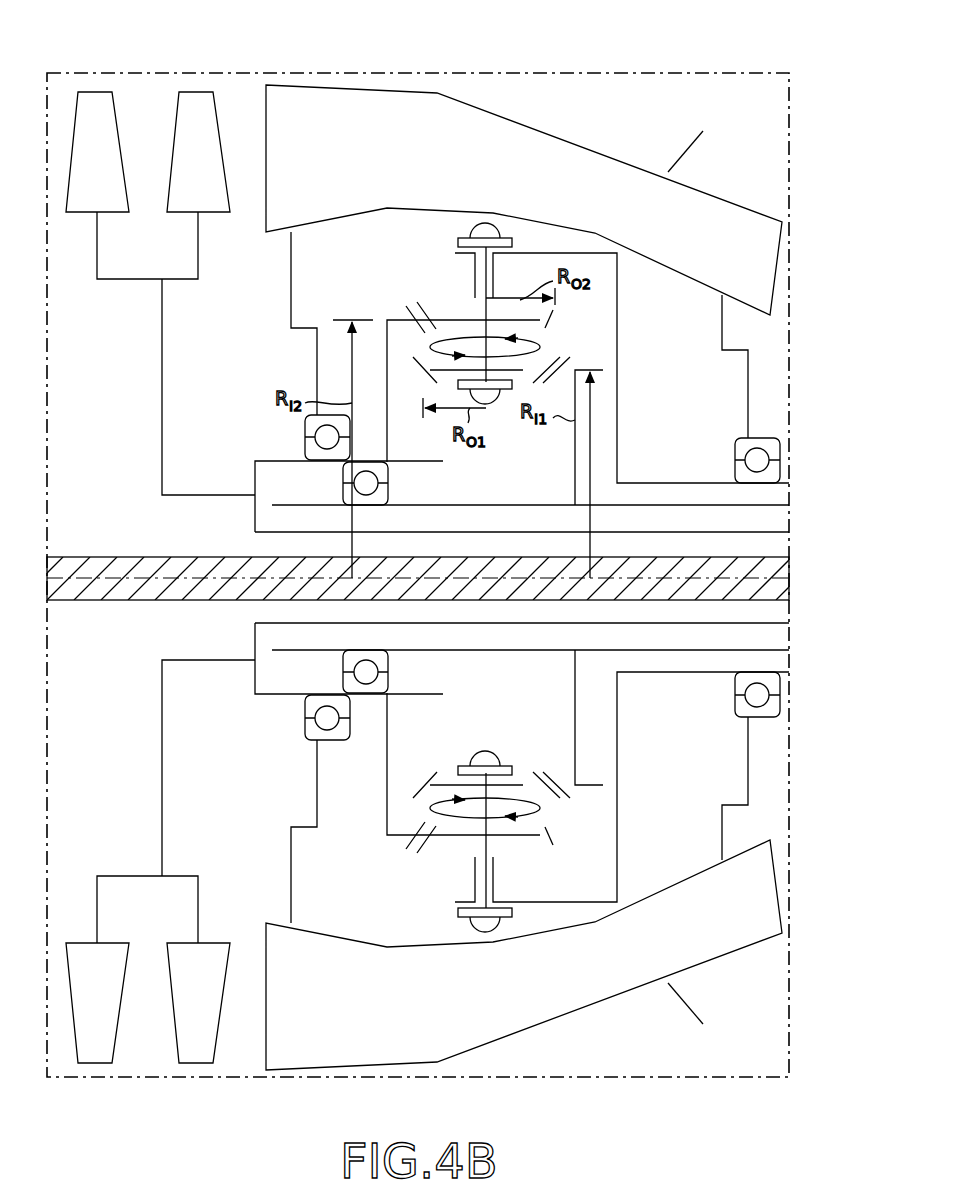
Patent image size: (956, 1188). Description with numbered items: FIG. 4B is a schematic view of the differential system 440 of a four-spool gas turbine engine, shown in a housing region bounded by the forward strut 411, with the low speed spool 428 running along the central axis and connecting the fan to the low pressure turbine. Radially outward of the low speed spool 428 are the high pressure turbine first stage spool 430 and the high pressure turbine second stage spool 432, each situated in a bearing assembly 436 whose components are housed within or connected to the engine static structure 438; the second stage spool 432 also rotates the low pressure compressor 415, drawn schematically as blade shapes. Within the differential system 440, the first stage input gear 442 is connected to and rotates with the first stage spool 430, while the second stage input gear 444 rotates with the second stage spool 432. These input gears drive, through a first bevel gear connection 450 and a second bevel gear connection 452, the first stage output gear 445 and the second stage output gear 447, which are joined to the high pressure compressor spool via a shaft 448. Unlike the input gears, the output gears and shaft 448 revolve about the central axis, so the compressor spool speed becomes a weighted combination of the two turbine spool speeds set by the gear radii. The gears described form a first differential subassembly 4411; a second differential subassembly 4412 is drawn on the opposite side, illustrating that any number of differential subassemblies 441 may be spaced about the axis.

The low pressure compressor 415 is at (147, 118).
The forward strut 411 is at (645, 182).
The differential system 440 is at (403, 262).
The differential subassembly 441 is at (458, 569).
The first differential subassembly 4411 is at (458, 342).
The second differential subassembly 4412 is at (404, 860).
The second bevel gear connection 452 is at (397, 307).
The second stage output gear 447 is at (440, 318).
The shaft 448 is at (495, 278).
The first stage output gear 445 is at (540, 355).
The first bevel gear connection 450 is at (578, 352).
The second stage input gear 444 is at (388, 436).
The first stage input gear 442 is at (575, 477).
The high pressure turbine second stage spool 432 is at (648, 531).
The high pressure turbine first stage spool 430 is at (703, 505).
The bearing assembly 436 is at (770, 438).
The engine static structure 438 is at (728, 320).
The low speed spool 428 is at (789, 598).